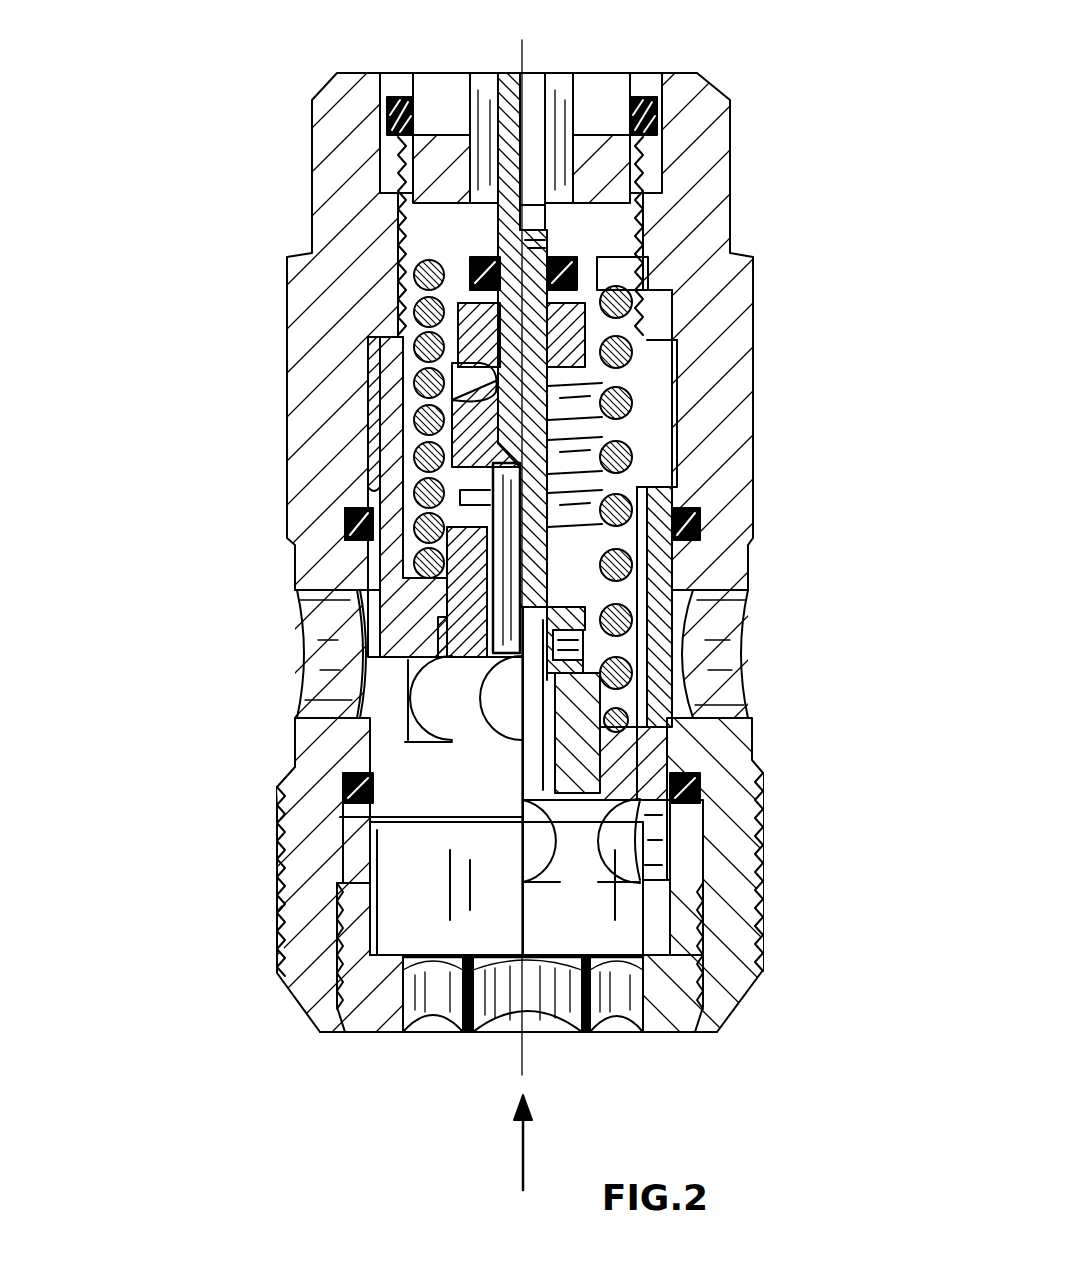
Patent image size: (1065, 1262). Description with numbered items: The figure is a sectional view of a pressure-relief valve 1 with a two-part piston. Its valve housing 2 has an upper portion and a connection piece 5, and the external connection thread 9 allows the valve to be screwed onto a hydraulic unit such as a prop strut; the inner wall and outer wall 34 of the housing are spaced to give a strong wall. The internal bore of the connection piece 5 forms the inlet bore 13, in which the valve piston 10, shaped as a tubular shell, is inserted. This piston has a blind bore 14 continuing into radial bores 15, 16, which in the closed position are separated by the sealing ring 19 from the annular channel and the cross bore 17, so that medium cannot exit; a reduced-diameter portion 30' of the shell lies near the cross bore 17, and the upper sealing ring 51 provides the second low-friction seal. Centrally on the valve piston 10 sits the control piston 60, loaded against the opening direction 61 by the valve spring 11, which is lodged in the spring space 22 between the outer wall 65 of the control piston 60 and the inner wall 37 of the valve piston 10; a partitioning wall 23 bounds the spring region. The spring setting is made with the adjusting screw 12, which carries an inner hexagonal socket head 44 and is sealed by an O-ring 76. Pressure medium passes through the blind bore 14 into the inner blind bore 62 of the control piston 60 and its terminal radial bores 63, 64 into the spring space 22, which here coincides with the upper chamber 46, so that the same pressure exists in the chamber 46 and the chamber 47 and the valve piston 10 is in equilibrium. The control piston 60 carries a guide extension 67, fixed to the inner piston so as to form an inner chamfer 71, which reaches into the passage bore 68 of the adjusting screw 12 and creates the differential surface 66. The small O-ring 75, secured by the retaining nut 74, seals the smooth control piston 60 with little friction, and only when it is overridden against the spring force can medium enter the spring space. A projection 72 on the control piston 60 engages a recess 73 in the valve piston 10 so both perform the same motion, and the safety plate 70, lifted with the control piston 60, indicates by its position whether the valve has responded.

The pressure-relief valve 1 is at (248, 803).
The valve housing 2 is at (755, 358).
The connection piece 5 is at (735, 922).
The external connection thread 9 is at (277, 938).
The valve piston 10 is at (385, 410).
The valve spring 11 is at (428, 382).
The adjusting screw 12 is at (605, 145).
The inlet bore 13 is at (622, 995).
The blind bore 14 is at (450, 797).
The radial bore 15 is at (428, 680).
The radial bore 16 is at (640, 865).
The cross bore 17 is at (718, 637).
The sealing ring 19 is at (350, 790).
The spring space 22 is at (650, 352).
The partitioning wall 23 is at (410, 613).
The nozzle 30' is at (335, 387).
The outer wall 34 is at (380, 592).
The inner wall 37 is at (455, 445).
The inner hexagonal socket head 44 is at (568, 120).
The upper chamber 46 is at (660, 398).
The chamber 47 is at (643, 940).
The upper sealing ring 51 is at (350, 525).
The control piston 60 is at (555, 595).
The opening direction 61 is at (520, 1170).
The inner blind bore 62 is at (620, 745).
The radial bore 63 is at (455, 490).
The radial bore 64 is at (575, 648).
The outer wall 65 is at (600, 570).
The differential surface 66 is at (438, 305).
The guide extension 67 is at (512, 172).
The passage bore 68 is at (560, 197).
The safety plate 70 is at (548, 232).
The inner chamfer 71 is at (600, 500).
The projection 72 is at (690, 790).
The recess 73 is at (440, 635).
The retaining nut 74 is at (597, 258).
The O-ring 75 is at (575, 252).
The O-ring 76 is at (645, 115).